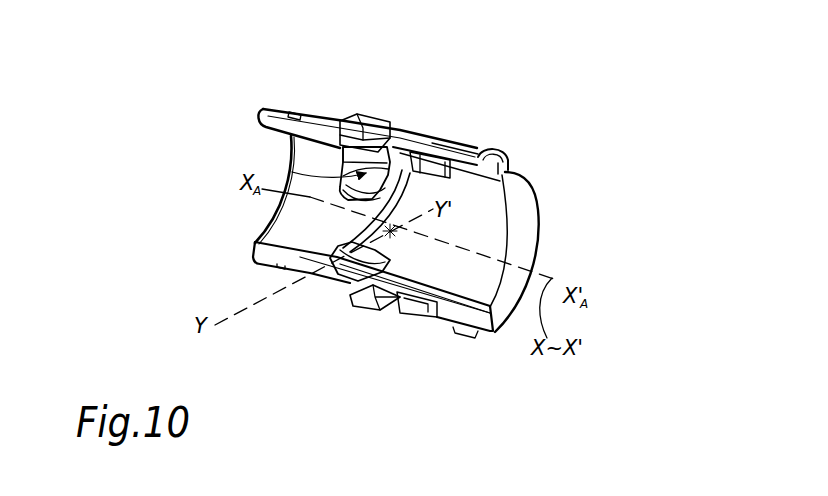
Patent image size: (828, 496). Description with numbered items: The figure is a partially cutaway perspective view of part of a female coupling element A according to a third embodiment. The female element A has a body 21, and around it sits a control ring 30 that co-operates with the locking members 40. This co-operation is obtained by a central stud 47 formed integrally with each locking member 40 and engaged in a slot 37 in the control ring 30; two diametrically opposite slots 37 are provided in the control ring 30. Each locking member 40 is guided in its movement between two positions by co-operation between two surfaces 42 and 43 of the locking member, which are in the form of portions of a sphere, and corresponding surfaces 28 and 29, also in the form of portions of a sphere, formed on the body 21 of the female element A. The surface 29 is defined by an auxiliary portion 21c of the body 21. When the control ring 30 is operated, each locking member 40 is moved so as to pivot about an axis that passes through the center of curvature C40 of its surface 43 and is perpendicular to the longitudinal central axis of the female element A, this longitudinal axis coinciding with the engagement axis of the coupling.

The body 21 is at (490, 195).
The auxiliary portion of the body 21c is at (296, 110).
The surface in the form of a portion of a sphere 29 is at (500, 160).
The central stud 47 is at (340, 121).
The slot 37 is at (378, 128).
The surface in the form of a portion of a sphere 28 is at (418, 140).
The control ring 30 is at (452, 143).
The locking member 40 is at (330, 263).
The surface in the form of a portion of a sphere 42 is at (350, 183).
The surface in the form of a portion of a sphere 43 is at (343, 226).
The female coupling element A is at (542, 183).
The center of curvature C40 is at (391, 235).